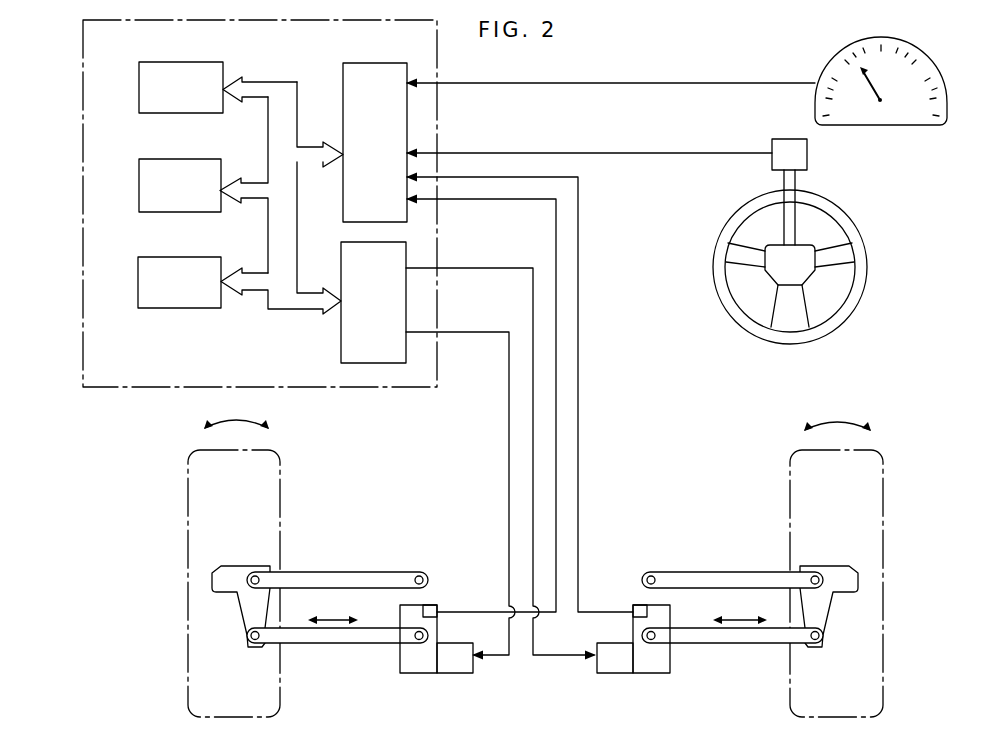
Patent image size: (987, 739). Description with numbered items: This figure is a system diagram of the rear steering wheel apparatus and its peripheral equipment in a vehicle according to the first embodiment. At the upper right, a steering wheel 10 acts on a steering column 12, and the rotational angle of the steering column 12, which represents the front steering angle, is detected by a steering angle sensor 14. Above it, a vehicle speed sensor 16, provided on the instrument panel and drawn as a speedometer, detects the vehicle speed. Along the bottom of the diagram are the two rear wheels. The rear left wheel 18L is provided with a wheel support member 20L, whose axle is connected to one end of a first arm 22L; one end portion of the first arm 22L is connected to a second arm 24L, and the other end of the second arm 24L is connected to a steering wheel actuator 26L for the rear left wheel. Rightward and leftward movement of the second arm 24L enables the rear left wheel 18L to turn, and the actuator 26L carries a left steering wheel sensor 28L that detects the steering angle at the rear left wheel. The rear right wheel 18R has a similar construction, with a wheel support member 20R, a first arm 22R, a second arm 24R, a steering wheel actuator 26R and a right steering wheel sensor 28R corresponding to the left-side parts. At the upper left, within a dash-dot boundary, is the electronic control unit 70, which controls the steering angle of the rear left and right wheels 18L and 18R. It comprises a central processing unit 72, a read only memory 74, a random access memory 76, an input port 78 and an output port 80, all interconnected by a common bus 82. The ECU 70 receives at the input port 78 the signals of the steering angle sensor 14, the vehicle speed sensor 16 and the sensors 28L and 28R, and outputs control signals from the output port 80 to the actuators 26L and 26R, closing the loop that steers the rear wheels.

The steering wheel 10 is at (858, 225).
The steering column 12 is at (796, 183).
The steering angle sensor 14 is at (808, 153).
The vehicle speed sensor 16 is at (944, 83).
The rear left wheel 18L is at (282, 525).
The rear right wheel 18R is at (790, 480).
The wheel support member 20L is at (240, 566).
The wheel support member 20R is at (852, 567).
The first arm 22L is at (345, 573).
The first arm 22R is at (720, 573).
The second arm 24L is at (347, 644).
The second arm 24R is at (744, 644).
The steering wheel actuator 26L is at (440, 673).
The steering wheel actuator 26R is at (612, 673).
The left steering wheel sensor 28L is at (428, 605).
The right steering wheel sensor 28R is at (638, 605).
The electronic control unit 70 is at (80, 98).
The central processing unit 72 is at (139, 76).
The read only memory 74 is at (139, 193).
The random access memory 76 is at (138, 292).
The input port 78 is at (343, 77).
The output port 80 is at (341, 270).
The common bus 82 is at (283, 309).